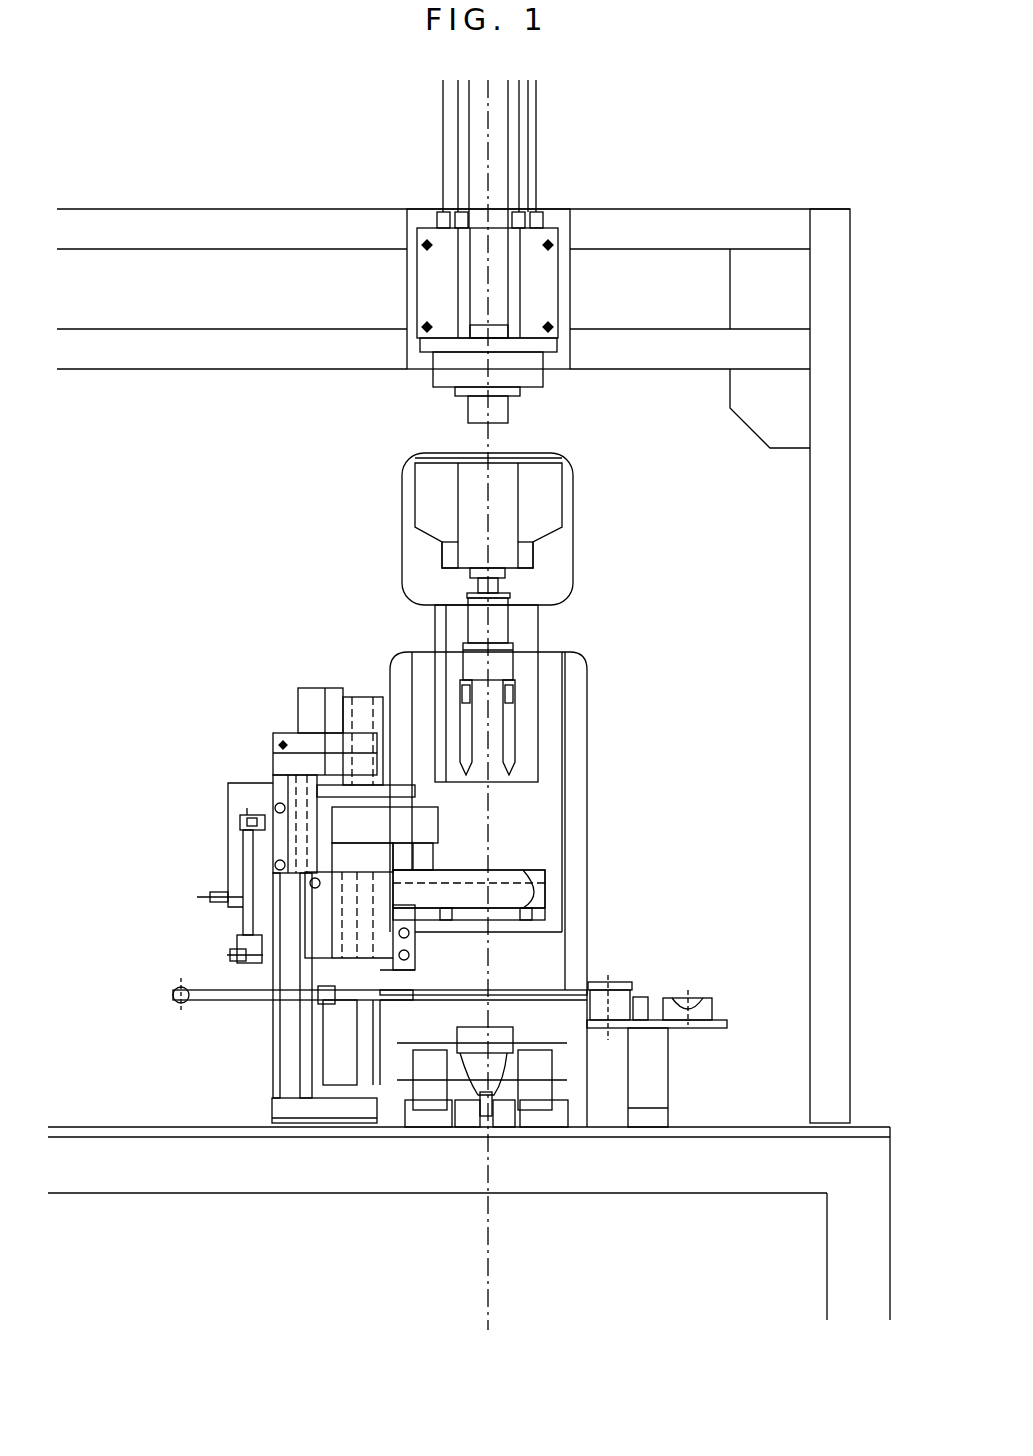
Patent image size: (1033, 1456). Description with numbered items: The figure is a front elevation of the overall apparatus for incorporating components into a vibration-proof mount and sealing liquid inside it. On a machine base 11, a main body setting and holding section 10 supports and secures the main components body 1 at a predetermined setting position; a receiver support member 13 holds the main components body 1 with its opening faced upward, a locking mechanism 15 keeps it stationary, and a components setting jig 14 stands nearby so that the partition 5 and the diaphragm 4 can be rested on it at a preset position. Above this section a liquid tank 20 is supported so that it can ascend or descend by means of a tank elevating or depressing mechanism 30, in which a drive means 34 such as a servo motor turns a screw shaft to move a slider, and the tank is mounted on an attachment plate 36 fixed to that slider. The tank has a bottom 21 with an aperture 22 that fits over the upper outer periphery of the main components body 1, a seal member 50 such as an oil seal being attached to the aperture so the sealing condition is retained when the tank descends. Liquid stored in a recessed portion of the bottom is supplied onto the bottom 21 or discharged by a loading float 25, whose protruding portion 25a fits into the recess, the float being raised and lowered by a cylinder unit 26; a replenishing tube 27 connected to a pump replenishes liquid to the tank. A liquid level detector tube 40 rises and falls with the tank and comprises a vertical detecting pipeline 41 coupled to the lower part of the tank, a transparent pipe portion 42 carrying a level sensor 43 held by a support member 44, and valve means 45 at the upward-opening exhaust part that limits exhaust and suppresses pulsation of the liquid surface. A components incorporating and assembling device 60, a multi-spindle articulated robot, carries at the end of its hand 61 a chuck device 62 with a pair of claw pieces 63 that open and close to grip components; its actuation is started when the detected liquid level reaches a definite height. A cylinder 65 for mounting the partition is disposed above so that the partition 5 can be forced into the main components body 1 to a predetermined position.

The main components body 1 is at (472, 1103).
The diaphragm 4 is at (697, 996).
The partition 5 is at (613, 980).
The main body setting and holding section 10 is at (505, 1127).
The machine base 11 is at (727, 1195).
The receiver support member 13 is at (452, 1115).
The components setting jig 14 is at (713, 1028).
The locking mechanism 15 is at (413, 1067).
The liquid tank 20 is at (548, 890).
The bottom 21 is at (428, 913).
The aperture 22 is at (530, 877).
The loading float 25 is at (403, 822).
The protruding portion 25a is at (345, 895).
The cylinder unit 26 is at (363, 707).
The replenishing tube 27 is at (228, 1003).
The tank elevating or depressing mechanism 30 is at (263, 745).
The drive means 34 is at (308, 707).
The attachment plate 36 is at (290, 800).
The liquid level detector tube 40 is at (240, 865).
The detecting pipeline 41 is at (243, 928).
The transparent pipe portion 42 is at (245, 882).
The level sensor 43 is at (218, 905).
The support member 44 is at (233, 793).
The valve means 45 is at (247, 825).
The seal member 50 is at (518, 928).
The components incorporating and assembling device 60 is at (592, 580).
The hand 61 is at (497, 623).
The chuck device 62 is at (522, 752).
The claw pieces 63 is at (463, 732).
The cylinder for mounting the partition 65 is at (478, 263).